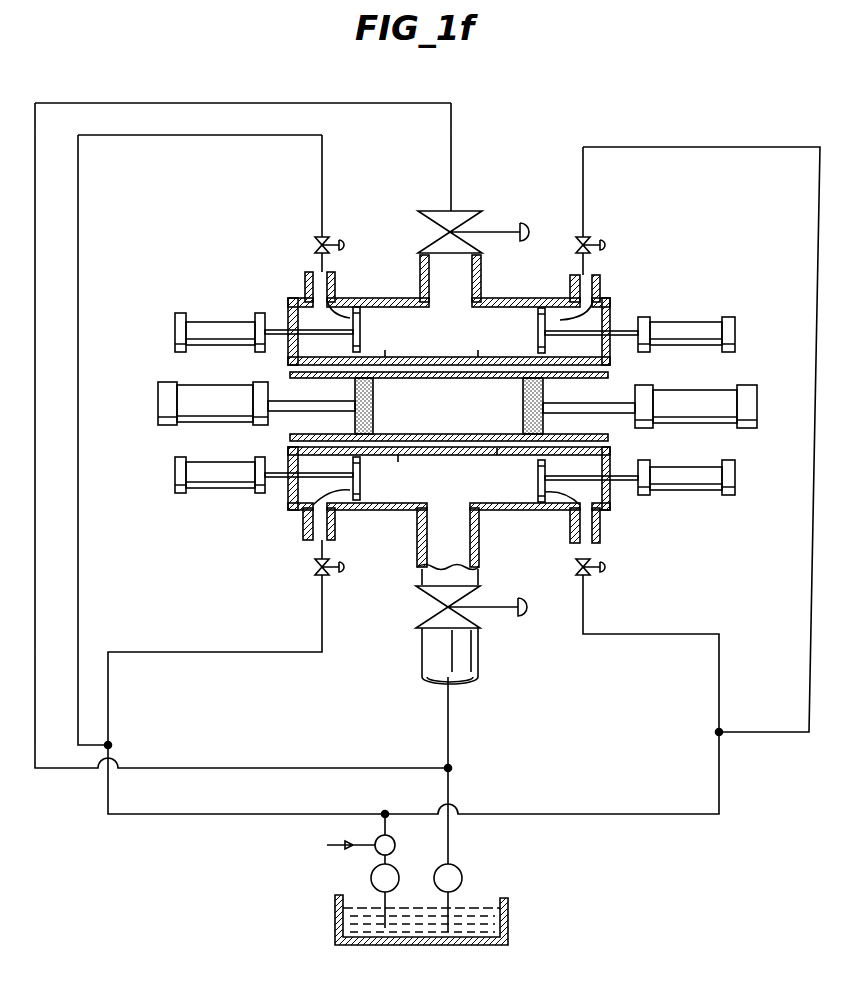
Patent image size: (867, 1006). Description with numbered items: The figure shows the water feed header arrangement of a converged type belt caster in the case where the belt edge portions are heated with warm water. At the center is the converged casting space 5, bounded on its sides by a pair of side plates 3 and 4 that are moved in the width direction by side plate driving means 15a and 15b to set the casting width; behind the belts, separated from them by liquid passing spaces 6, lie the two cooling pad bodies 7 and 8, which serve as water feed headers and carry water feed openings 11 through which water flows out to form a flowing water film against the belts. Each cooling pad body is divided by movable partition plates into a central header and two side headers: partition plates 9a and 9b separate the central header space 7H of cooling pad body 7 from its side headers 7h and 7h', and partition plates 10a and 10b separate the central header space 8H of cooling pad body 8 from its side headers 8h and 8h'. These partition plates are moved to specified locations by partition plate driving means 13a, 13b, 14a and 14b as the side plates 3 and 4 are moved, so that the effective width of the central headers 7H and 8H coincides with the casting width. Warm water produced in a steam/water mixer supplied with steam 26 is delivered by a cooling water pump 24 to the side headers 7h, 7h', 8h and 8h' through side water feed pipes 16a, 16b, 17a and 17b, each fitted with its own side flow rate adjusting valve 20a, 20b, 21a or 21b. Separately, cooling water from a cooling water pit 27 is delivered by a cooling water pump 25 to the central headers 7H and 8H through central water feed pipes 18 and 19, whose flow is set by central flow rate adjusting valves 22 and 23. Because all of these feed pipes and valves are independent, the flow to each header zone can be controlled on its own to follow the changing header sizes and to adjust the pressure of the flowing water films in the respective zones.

The side plate 3 is at (530, 378).
The side plate 4 is at (368, 440).
The casting space 5 is at (452, 421).
The liquid passing space 6 is at (610, 438).
The cooling pad body 7 is at (366, 298).
The central header space 7H is at (456, 338).
The side header 7h is at (287, 343).
The side header 7h' is at (593, 347).
The cooling pad body 8 is at (510, 510).
The central header space 8H is at (456, 487).
The side header 8h is at (306, 464).
The side header 8h' is at (614, 465).
The partition plate 9a is at (330, 300).
The partition plate 9b is at (595, 300).
The partition plate 10a is at (315, 505).
The partition plate 10b is at (550, 505).
The water feed opening 11 is at (497, 448).
The partition plate driving means 13a is at (215, 322).
The partition plate driving means 13b is at (700, 322).
The partition plate driving means 14a is at (215, 490).
The partition plate driving means 14b is at (695, 490).
The side plate driving means 15a is at (225, 408).
The side plate driving means 15b is at (670, 396).
The side water feed pipe 16a is at (302, 292).
The side water feed pipe 16b is at (602, 296).
The side water feed pipe 17a is at (303, 530).
The side water feed pipe 17b is at (600, 528).
The central water feed pipe 18 is at (420, 277).
The central water feed pipe 19 is at (480, 652).
The side flow rate adjusting valve 20a is at (320, 238).
The side flow rate adjusting valve 20b is at (584, 238).
The side flow rate adjusting valve 21a is at (326, 577).
The side flow rate adjusting valve 21b is at (578, 580).
The central flow rate adjusting valve 22 is at (470, 210).
The central flow rate adjusting valve 23 is at (418, 618).
The cooling water pump 24 is at (371, 878).
The cooling water pump 25 is at (460, 870).
The steam 26 is at (342, 836).
The cooling water pit 27 is at (480, 920).